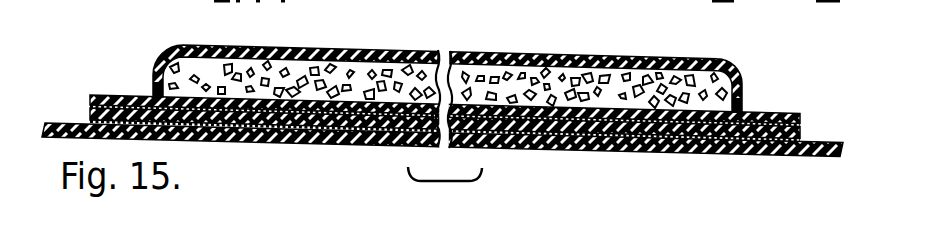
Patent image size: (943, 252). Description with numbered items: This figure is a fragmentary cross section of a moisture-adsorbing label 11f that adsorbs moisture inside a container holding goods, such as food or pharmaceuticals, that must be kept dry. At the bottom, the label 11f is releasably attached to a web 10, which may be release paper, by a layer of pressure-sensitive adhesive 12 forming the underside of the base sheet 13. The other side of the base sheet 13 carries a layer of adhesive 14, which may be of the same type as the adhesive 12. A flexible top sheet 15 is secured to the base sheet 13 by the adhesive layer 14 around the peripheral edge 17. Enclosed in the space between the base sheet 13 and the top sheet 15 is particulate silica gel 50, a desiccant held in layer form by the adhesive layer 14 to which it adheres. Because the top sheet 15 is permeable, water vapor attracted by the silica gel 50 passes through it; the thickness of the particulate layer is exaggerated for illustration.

The web 10 is at (735, 157).
The moisture-adsorbing label 11f is at (464, 77).
The layer of pressure-sensitive adhesive 12 is at (86, 118).
The base sheet 13 is at (454, 106).
The layer of adhesive 14 is at (85, 102).
The flexible top sheet 15 is at (690, 59).
The peripheral edge 17 is at (120, 96).
The particulate silica gel 50 is at (578, 80).